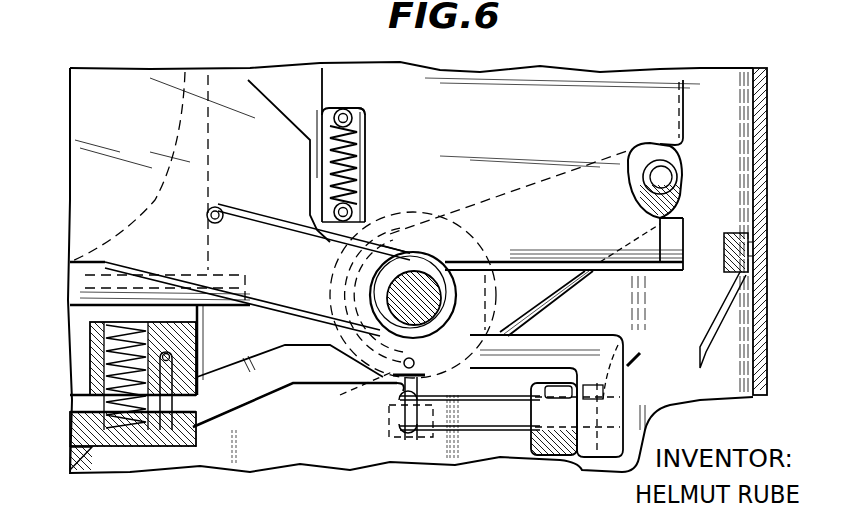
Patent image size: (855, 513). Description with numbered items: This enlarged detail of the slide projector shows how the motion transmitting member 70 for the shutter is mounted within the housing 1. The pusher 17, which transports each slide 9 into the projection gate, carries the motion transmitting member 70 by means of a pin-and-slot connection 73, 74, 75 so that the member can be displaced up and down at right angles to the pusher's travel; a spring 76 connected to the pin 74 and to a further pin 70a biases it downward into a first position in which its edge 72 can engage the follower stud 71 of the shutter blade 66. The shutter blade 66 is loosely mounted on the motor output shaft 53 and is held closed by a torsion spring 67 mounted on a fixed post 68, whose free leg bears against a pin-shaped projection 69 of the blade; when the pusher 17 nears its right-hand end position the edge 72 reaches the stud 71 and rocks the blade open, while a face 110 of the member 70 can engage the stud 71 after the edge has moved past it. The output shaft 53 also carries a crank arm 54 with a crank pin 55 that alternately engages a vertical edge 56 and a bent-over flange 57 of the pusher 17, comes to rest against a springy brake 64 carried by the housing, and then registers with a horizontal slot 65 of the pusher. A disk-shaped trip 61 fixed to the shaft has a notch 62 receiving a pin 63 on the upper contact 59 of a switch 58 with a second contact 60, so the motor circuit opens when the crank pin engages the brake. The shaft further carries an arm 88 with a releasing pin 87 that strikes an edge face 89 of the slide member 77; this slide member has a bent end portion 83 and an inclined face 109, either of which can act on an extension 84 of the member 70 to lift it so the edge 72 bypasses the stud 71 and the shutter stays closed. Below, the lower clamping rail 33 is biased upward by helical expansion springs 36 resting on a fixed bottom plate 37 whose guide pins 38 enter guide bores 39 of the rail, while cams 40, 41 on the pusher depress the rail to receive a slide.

The housing 1 is at (768, 93).
The slide 9 is at (208, 75).
The pusher 17 is at (499, 115).
The lower clamping rail 33 is at (85, 296).
The helical expansion spring 36 is at (90, 362).
The bottom plate 37 is at (72, 431).
The guide pin 38 is at (162, 450).
The guide bore 39 is at (198, 336).
The cam 40 is at (295, 388).
The cam 41 is at (546, 392).
The output shaft 53 is at (458, 262).
The crank arm 54 is at (562, 290).
The crank pin 55 is at (680, 180).
The vertical edge 56 is at (636, 360).
The bent-over flange 57 is at (679, 100).
The switch 58 is at (556, 455).
The upper contact 59 is at (480, 400).
The contact 60 is at (462, 455).
The disk-shaped trip 61 is at (470, 355).
The notch 62 is at (440, 377).
The pin 63 is at (424, 386).
The springy brake 64 is at (728, 298).
The horizontal slot 65 is at (650, 272).
The shutter blade 66 is at (252, 97).
The torsion spring 67 is at (268, 217).
The fixed post 68 is at (410, 440).
The pin-shaped projection 69 is at (206, 216).
The motion transmitting member 70 is at (364, 110).
The pin 70a is at (334, 118).
The follower stud 71 is at (480, 264).
The edge 72 is at (367, 130).
The pin-and-slot connection 73 is at (350, 162).
The pin 74 is at (395, 224).
The pin-and-slot connection 75 is at (358, 178).
The spring 76 is at (334, 168).
The slide member 77 is at (80, 463).
The end portion 83 is at (295, 388).
The extension 84 is at (334, 308).
The releasing pin 87 is at (348, 392).
The arm 88 is at (507, 302).
The edge face 89 is at (400, 390).
The inclined face 109 is at (262, 354).
The face 110 is at (325, 249).